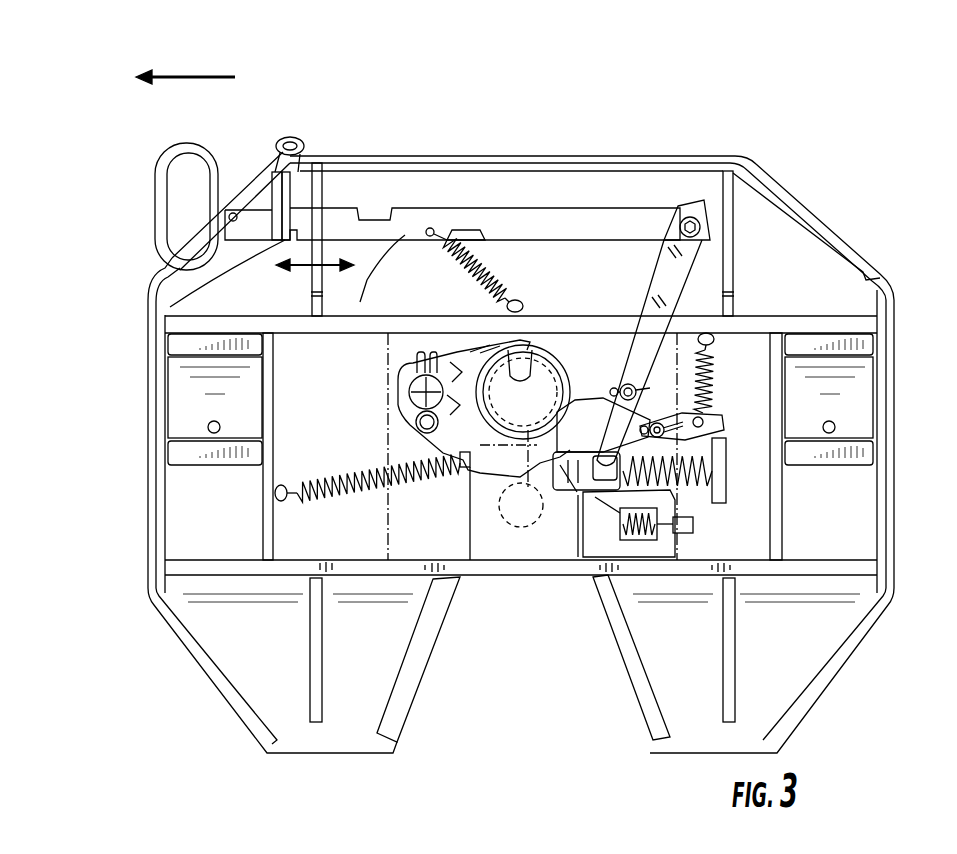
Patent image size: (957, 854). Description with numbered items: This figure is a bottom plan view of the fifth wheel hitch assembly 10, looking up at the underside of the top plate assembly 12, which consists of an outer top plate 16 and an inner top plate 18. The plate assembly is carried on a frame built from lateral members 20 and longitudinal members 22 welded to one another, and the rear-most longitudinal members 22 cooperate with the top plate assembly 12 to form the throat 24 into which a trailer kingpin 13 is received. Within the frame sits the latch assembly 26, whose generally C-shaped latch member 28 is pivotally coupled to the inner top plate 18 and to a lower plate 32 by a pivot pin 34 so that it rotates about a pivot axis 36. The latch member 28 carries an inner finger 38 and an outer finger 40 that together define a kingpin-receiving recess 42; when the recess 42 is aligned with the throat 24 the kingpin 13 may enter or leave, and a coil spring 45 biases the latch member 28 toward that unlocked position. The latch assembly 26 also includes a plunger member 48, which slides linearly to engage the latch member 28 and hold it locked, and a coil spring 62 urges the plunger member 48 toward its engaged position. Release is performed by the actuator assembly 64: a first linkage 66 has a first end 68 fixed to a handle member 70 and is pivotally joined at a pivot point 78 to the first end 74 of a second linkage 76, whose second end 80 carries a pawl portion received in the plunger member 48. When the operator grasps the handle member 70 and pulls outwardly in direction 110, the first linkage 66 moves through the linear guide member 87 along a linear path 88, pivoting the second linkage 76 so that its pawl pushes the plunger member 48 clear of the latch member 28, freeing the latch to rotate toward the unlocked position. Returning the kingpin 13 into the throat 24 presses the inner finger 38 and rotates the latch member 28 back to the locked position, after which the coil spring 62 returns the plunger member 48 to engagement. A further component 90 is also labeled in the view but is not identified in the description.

The fifth wheel hitch assembly 10 is at (546, 68).
The top plate assembly 12 is at (446, 142).
The kingpin 13 is at (537, 477).
The outer top plate 16 is at (350, 703).
The inner top plate 18 is at (408, 273).
The lateral member 20 is at (583, 170).
The longitudinal member 22 is at (688, 245).
The throat 24 is at (510, 674).
The latch assembly 26 is at (547, 290).
The latch member 28 is at (502, 455).
The lower plate 32 is at (605, 355).
The pivot pin 34 is at (415, 397).
The pivot axis 36 is at (445, 363).
The inner finger 38 is at (495, 350).
The outer finger 40 is at (540, 462).
The kingpin-receiving recess 42 is at (580, 266).
The coil spring 45 is at (307, 560).
The plunger member 48 is at (598, 580).
The coil spring 62 is at (665, 215).
The actuator assembly 64 is at (699, 194).
The first linkage 66 is at (354, 208).
The first end 68 is at (247, 218).
The handle member 70 is at (180, 143).
The first end 74 is at (693, 283).
The second linkage 76 is at (803, 323).
The pivot point 78 is at (703, 232).
The second end 80 is at (612, 433).
The linear guide member 87 is at (165, 278).
The linear path 88 is at (331, 280).
The kingpin socket 90 is at (527, 370).
The direction 110 is at (187, 80).